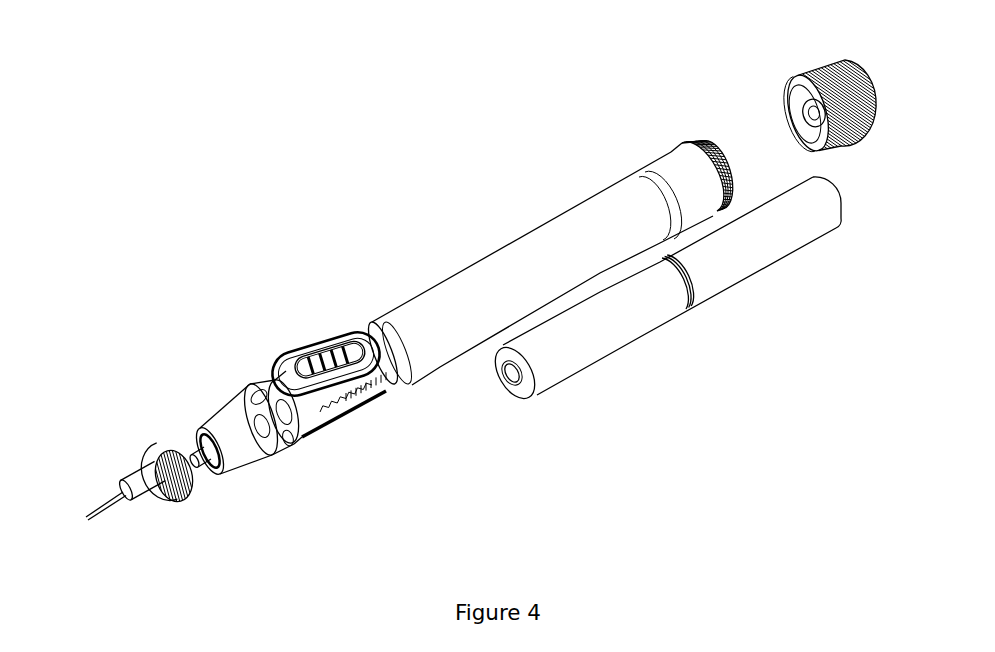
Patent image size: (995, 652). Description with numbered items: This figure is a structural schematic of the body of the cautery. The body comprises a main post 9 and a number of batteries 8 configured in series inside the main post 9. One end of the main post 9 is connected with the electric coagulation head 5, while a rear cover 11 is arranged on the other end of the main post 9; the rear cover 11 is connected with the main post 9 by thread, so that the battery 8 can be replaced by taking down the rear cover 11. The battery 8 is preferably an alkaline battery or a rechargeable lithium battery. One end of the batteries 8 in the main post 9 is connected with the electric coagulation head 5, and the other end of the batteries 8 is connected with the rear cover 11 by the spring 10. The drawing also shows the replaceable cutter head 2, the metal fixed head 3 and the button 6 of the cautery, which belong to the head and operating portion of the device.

The replaceable cutter head 2 is at (180, 490).
The metal fixed head 3 is at (240, 455).
The electric coagulation head 5 is at (195, 437).
The button 6 is at (318, 357).
The battery 8 is at (627, 322).
The main post 9 is at (493, 282).
The spring 10 is at (795, 103).
The rear cover 11 is at (860, 120).